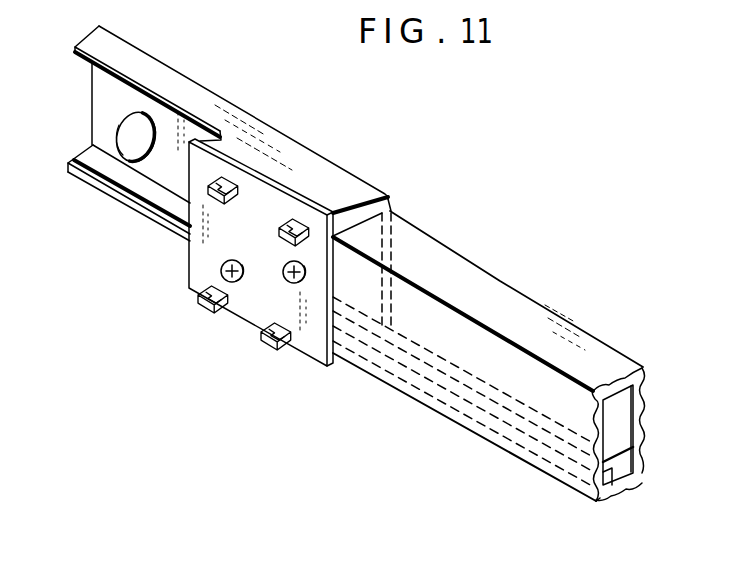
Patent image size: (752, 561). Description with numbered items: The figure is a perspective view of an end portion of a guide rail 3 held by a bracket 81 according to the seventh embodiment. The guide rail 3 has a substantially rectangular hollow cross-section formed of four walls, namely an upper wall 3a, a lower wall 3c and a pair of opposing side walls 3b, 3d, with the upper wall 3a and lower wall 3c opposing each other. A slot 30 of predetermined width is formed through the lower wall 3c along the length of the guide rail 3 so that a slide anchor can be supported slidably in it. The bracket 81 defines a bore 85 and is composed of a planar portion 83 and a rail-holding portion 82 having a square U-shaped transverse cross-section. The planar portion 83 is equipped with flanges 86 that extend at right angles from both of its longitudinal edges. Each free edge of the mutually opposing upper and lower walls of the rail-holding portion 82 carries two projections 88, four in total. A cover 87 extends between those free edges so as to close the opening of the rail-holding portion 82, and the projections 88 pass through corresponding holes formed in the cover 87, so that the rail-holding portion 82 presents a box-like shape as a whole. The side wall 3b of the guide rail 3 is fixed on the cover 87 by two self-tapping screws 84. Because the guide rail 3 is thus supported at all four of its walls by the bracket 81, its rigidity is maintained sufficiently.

The guide rail 3 is at (519, 386).
The upper wall 3a is at (481, 301).
The side wall 3b is at (478, 351).
The lower wall 3c is at (598, 504).
The side wall 3d is at (648, 400).
The slot 30 is at (613, 483).
The bracket 81 is at (130, 154).
The rail-holding portion 82 is at (332, 163).
The planar portion 83 is at (130, 98).
The self-tapping screws 84 is at (285, 260).
The bore 85 is at (135, 120).
The flanges 86 is at (103, 42).
The cover 87 is at (255, 305).
The projections 88 is at (205, 299).